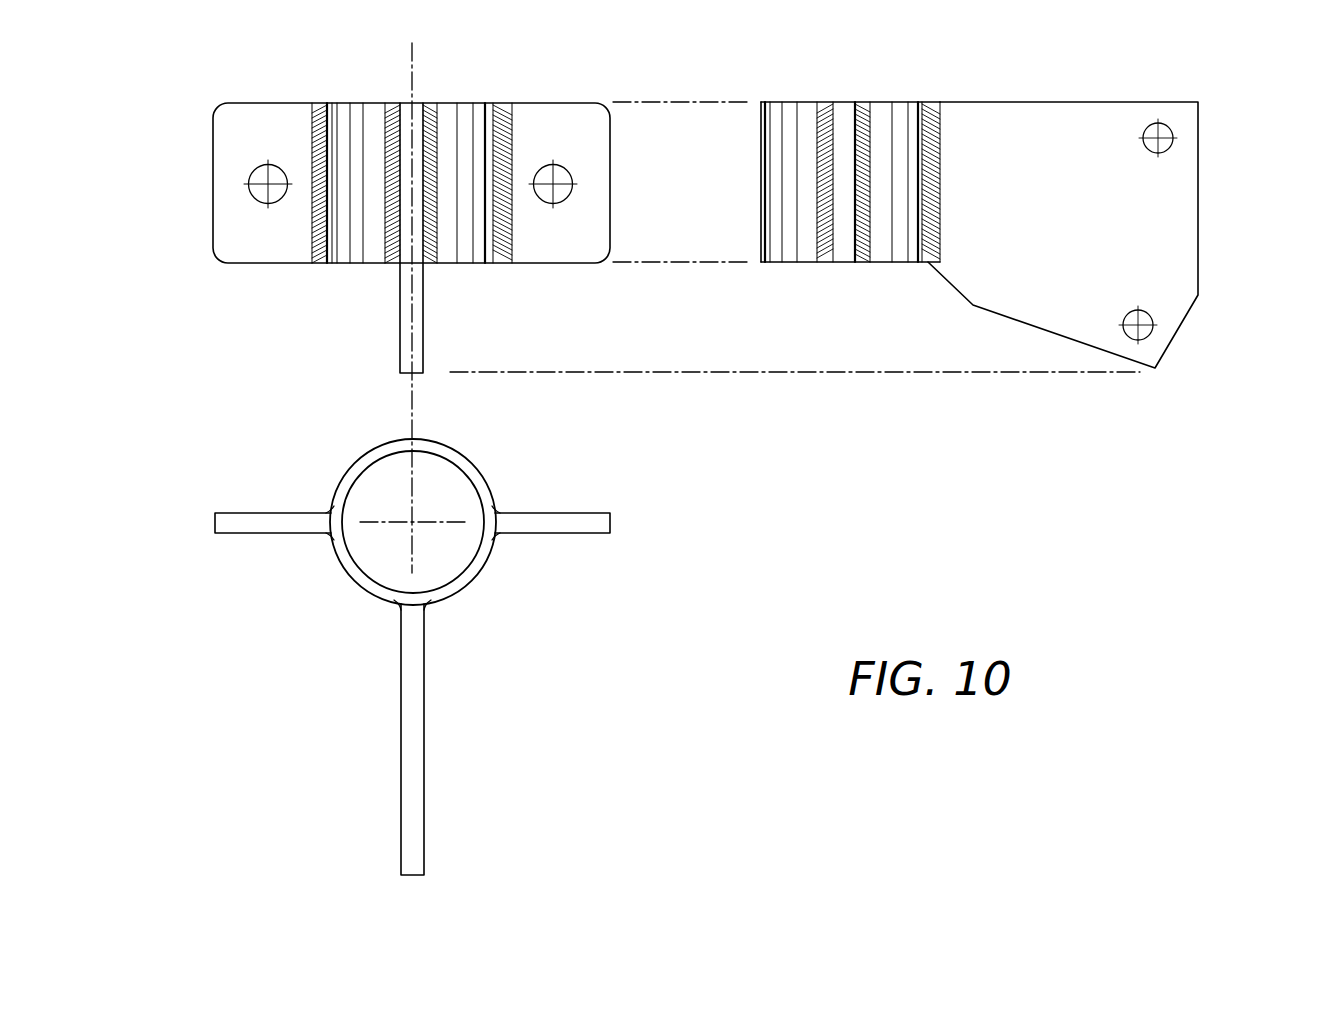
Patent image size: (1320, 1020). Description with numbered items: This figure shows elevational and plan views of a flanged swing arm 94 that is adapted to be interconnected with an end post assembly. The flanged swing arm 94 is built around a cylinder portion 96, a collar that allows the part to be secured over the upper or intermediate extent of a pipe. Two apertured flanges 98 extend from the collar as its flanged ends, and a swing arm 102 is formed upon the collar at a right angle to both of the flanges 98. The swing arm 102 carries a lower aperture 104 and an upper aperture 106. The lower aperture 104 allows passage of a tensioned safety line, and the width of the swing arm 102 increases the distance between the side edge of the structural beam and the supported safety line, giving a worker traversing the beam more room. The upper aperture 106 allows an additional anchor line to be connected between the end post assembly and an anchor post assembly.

The flanged swing arm 94 is at (266, 290).
The cylinder portion 96 is at (455, 228).
The apertured flanges 98 is at (217, 157).
The swing arm 102 is at (402, 297).
The lower aperture 104 is at (1152, 317).
The upper aperture 106 is at (1173, 138).